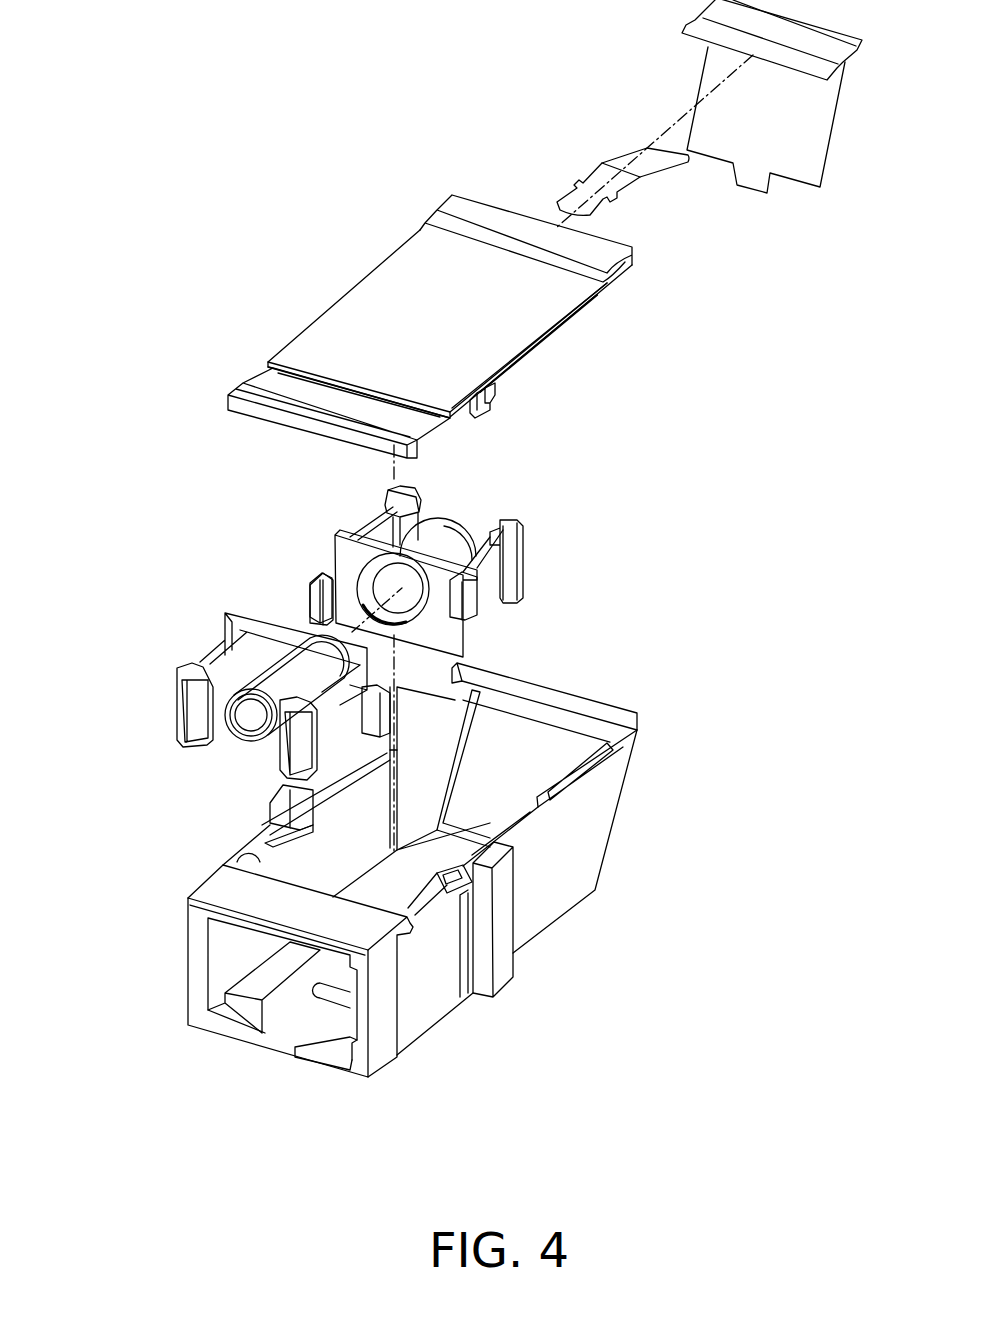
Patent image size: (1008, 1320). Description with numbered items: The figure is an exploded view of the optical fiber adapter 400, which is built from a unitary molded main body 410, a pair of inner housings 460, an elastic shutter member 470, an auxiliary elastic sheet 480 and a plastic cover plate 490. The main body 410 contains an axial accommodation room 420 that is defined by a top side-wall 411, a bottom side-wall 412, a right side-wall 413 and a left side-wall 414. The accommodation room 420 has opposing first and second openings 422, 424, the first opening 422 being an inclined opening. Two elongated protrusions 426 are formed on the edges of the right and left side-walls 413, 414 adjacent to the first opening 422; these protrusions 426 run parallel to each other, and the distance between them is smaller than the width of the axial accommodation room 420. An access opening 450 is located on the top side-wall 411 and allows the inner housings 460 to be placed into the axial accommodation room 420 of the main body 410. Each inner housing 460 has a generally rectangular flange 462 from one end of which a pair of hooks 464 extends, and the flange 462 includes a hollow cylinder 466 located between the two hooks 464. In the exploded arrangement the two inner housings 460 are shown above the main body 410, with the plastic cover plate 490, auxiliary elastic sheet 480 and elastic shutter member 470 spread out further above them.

The optical fiber adapter 400 is at (239, 120).
The main body 410 is at (765, 780).
The top side-wall 411 is at (237, 888).
The bottom side-wall 412 is at (293, 972).
The right side-wall 413 is at (568, 868).
The left side-wall 414 is at (435, 747).
The axial accommodation room 420 is at (445, 853).
The first opening 422 is at (603, 703).
The second opening 424 is at (260, 1010).
The elongated protrusions 426 is at (483, 692).
The access opening 450 is at (423, 867).
The inner housings 460 is at (217, 555).
The flange 462 is at (355, 538).
The hooks 464 is at (413, 490).
The hollow cylinder 466 is at (530, 537).
The elastic shutter member 470 is at (658, 52).
The auxiliary elastic sheet 480 is at (568, 153).
The plastic cover plate 490 is at (332, 265).